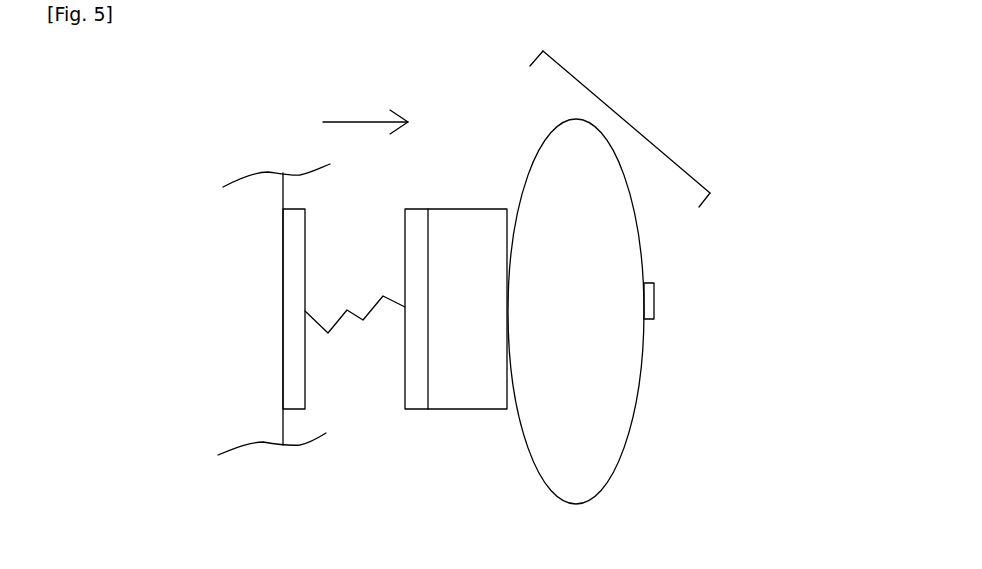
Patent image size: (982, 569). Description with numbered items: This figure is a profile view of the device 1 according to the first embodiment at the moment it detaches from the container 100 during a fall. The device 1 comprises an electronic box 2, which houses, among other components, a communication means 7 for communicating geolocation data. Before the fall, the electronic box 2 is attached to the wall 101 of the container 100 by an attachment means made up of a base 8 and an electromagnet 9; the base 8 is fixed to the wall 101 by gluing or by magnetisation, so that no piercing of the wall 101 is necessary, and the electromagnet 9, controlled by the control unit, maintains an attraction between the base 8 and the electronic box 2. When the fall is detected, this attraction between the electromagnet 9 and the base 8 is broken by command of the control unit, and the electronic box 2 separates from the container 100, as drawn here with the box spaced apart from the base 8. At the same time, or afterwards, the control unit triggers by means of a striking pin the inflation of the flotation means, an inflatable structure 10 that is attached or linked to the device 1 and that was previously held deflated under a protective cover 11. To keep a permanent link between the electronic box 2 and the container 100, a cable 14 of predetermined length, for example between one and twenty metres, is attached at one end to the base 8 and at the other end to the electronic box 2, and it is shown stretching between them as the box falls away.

The device 1 is at (726, 249).
The electronic box 2 is at (461, 230).
The communication means 7 is at (654, 305).
The base 8 is at (288, 316).
The electromagnet 9 is at (417, 223).
The inflatable structure 10 is at (628, 393).
The cover 11 is at (667, 158).
The cable 14 is at (348, 313).
The container 100 is at (228, 243).
The wall 101 is at (283, 283).